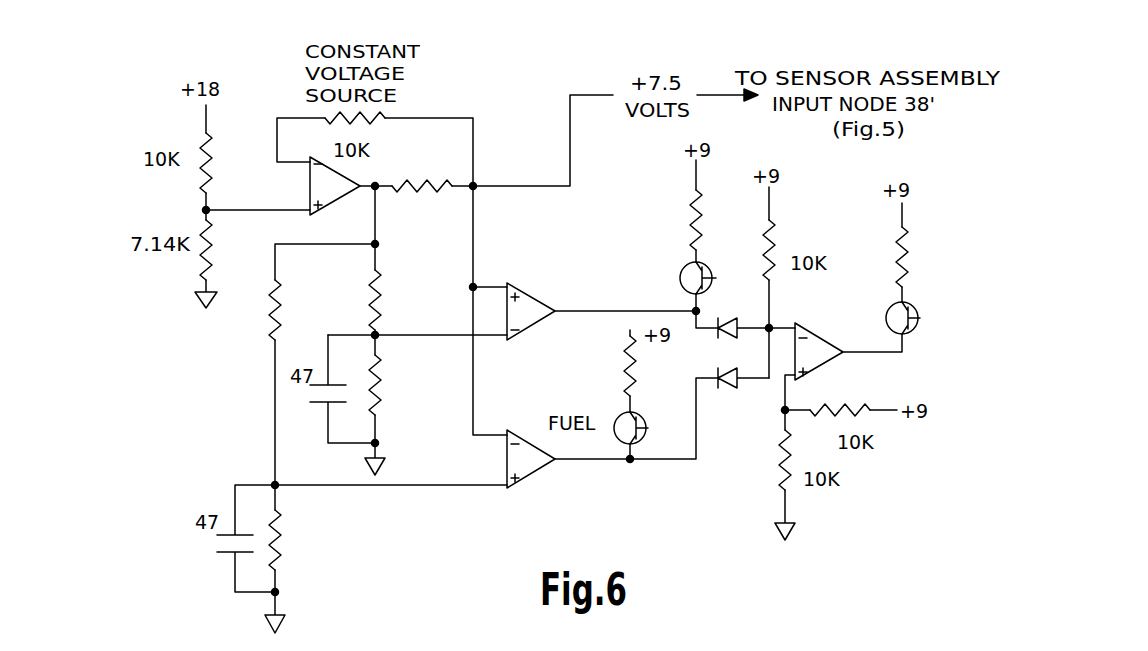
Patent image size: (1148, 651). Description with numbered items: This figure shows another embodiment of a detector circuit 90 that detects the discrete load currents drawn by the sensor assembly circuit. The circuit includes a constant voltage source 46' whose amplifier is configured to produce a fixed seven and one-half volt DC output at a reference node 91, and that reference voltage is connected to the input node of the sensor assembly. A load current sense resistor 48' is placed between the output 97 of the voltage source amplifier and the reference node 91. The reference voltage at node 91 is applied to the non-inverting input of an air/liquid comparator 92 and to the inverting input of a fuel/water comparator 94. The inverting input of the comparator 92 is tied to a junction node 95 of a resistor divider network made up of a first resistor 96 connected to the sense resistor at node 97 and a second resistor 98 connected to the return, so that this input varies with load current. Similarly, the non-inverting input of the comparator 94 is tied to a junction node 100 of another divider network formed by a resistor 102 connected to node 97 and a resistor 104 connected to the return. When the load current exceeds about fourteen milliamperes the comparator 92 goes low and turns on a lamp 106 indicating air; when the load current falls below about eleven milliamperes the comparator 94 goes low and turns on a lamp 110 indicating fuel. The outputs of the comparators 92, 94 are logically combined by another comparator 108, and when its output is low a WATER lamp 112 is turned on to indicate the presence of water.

The detector circuit 90 is at (637, 37).
The constant voltage source 46' is at (297, 180).
The load current sense resistor 48' is at (426, 185).
The reference node 91 is at (476, 183).
The air/liquid comparator 92 is at (528, 288).
The fuel/water comparator 94 is at (520, 434).
The junction node 95 is at (385, 333).
The first resistor 96 is at (385, 276).
The output 97 is at (378, 183).
The second resistor 98 is at (381, 414).
The junction node 100 is at (273, 482).
The resistor 102 is at (268, 331).
The resistor 104 is at (281, 519).
The lamp 106 is at (688, 266).
The comparator 108 is at (825, 338).
The lamp 110 is at (643, 416).
The WATER lamp 112 is at (911, 304).